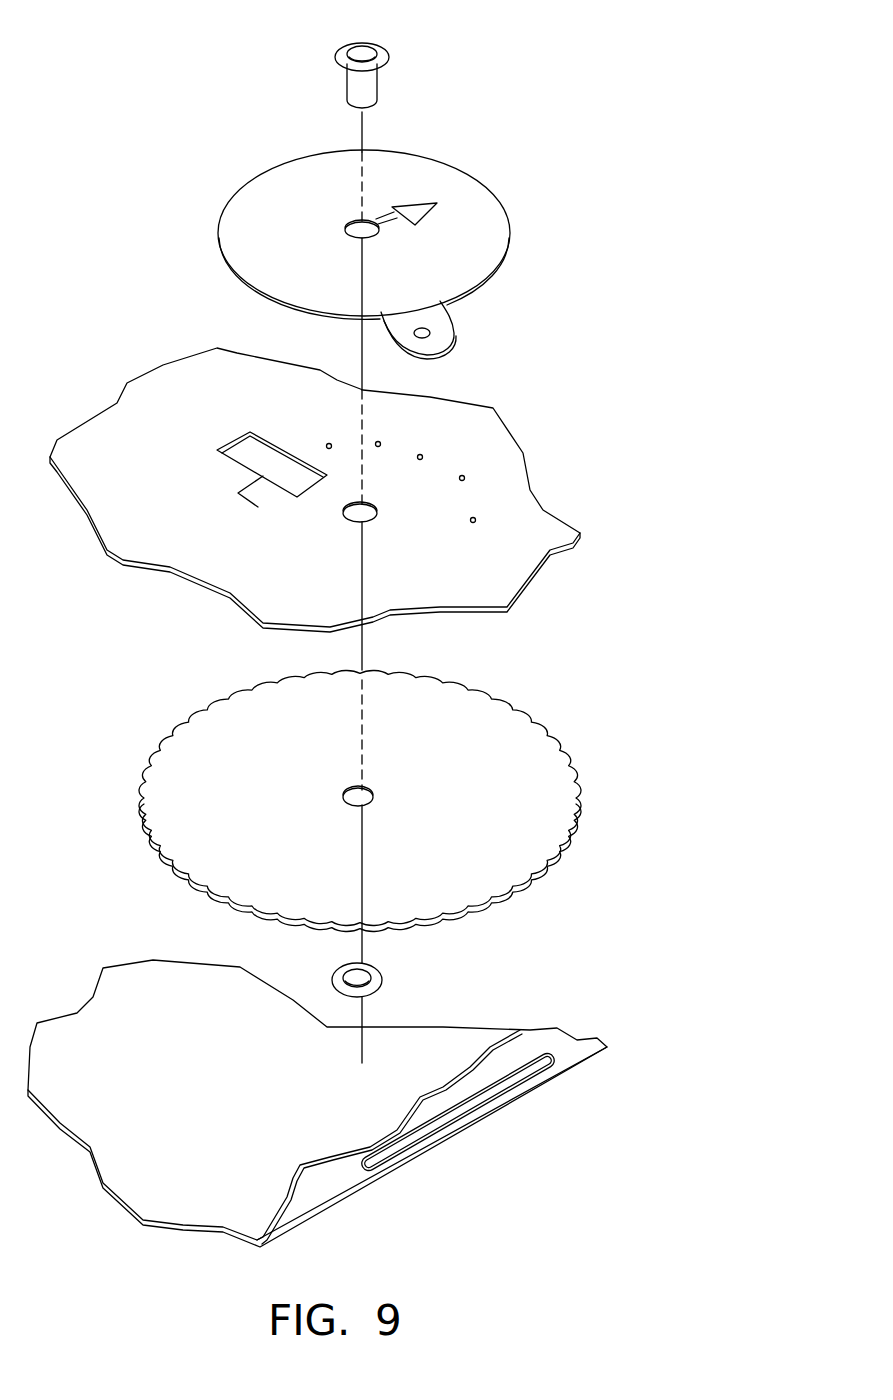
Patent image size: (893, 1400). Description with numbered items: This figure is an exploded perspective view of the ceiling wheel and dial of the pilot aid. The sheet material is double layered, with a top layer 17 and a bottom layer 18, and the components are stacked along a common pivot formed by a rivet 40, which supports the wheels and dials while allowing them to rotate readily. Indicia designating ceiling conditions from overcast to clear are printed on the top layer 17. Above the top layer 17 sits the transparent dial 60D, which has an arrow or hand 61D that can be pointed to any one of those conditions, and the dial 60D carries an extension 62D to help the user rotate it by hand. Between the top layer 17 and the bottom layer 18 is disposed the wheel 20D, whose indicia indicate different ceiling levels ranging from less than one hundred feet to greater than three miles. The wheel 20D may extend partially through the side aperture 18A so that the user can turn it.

The rivet 40 is at (342, 52).
The transparent dial 60D is at (473, 228).
The arrow or hand 61D is at (413, 203).
The extension 62D is at (441, 331).
The top layer 17 is at (548, 510).
The wheel 20D is at (520, 740).
The bottom layer 18 is at (497, 1015).
The side aperture 18A is at (473, 1102).